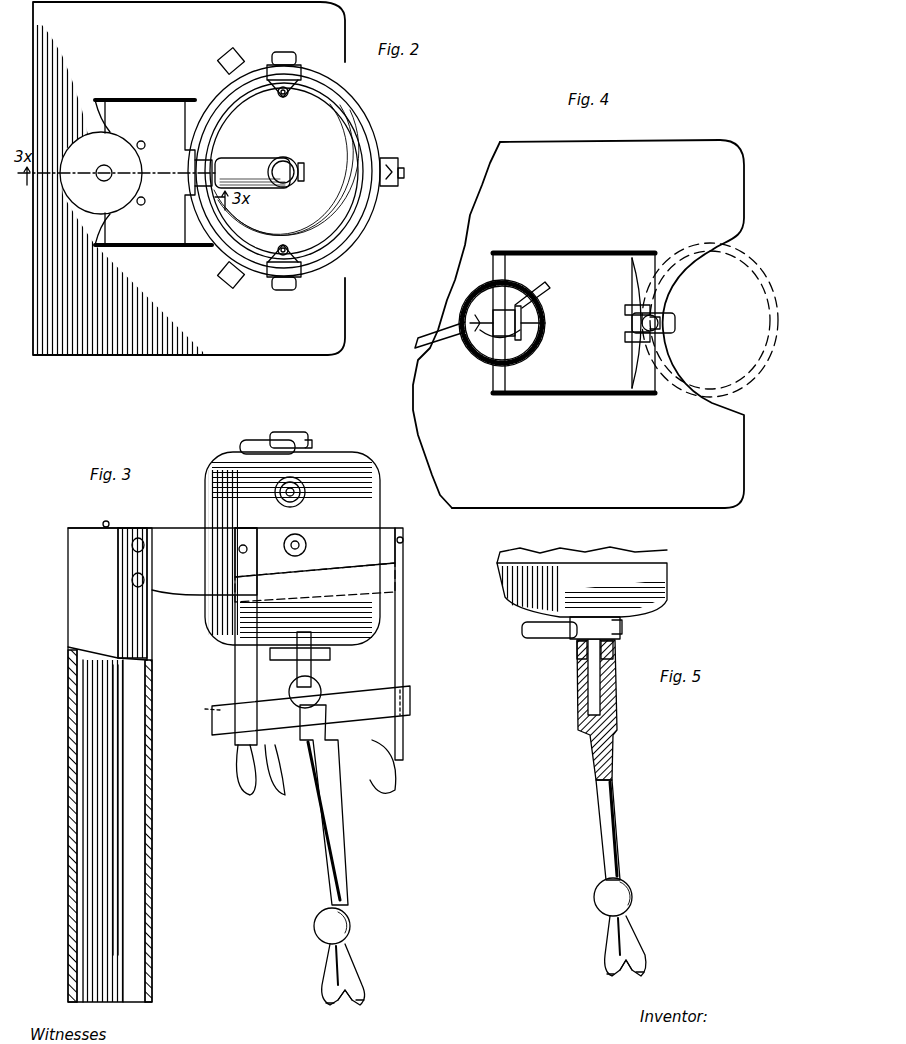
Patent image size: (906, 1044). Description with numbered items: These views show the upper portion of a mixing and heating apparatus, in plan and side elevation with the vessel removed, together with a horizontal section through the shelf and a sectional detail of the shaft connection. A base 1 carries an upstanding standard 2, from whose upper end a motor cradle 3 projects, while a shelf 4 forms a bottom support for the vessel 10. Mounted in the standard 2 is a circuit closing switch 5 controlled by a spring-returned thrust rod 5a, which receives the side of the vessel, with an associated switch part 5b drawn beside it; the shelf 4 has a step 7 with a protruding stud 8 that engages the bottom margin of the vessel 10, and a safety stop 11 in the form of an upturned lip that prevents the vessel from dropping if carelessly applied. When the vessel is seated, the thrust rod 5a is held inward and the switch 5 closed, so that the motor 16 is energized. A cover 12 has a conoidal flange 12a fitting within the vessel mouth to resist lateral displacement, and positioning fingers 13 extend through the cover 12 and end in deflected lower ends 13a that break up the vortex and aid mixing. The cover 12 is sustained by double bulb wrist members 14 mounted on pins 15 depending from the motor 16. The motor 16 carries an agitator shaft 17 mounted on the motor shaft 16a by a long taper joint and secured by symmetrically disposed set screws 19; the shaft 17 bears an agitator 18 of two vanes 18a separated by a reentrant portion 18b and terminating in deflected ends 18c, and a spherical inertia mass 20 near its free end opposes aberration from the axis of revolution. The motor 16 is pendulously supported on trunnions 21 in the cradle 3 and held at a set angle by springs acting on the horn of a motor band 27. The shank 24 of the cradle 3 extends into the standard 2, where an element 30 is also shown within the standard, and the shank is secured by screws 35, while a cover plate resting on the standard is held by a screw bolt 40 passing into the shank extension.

In FIG. 2, the base 1 is at (189, 178).
In FIG. 2, the standard 2 is at (115, 150).
In FIG. 4, the standard 2 is at (480, 293).
In FIG. 3, the standard 2 is at (152, 895).
In FIG. 2, the motor cradle 3 is at (372, 123).
In FIG. 3, the motor cradle 3 is at (362, 540).
In FIG. 2, the shelf 4 is at (162, 220).
In FIG. 4, the shelf 4 is at (574, 323).
In FIG. 4, the circuit closing switch 5 is at (508, 308).
In FIG. 4, the thrust rod 5a is at (628, 335).
In FIG. 4, the switch arm 5b is at (541, 295).
In FIG. 4, the step 7 is at (675, 322).
In FIG. 4, the stud 8 is at (658, 318).
In FIG. 4, the vessel 10 is at (755, 280).
In FIG. 4, the safety stop 11 is at (676, 323).
In FIG. 3, the cover 12 is at (212, 728).
In FIG. 3, the conoidal flange 12a is at (410, 700).
In FIG. 2, the positioning fingers 13 is at (230, 58).
In FIG. 3, the positioning fingers 13 is at (240, 680).
In FIG. 3, the deflected lower ends 13a is at (245, 780).
In FIG. 3, the double bulb wrist members 14 is at (320, 688).
In FIG. 3, the pins 15 is at (304, 630).
In FIG. 2, the motor 16 is at (259, 156).
In FIG. 3, the motor 16 is at (362, 475).
In FIG. 5, the motor 16 is at (652, 572).
In FIG. 5, the motor shaft 16a is at (595, 695).
In FIG. 3, the agitator shaft 17 is at (345, 870).
In FIG. 5, the agitator shaft 17 is at (620, 818).
In FIG. 3, the agitator 18 is at (350, 960).
In FIG. 5, the agitator 18 is at (630, 932).
In FIG. 3, the vanes 18a is at (322, 975).
In FIG. 5, the vanes 18a is at (605, 952).
In FIG. 3, the reentrant portion 18b is at (345, 1005).
In FIG. 5, the reentrant portion 18b is at (626, 975).
In FIG. 3, the deflected ends 18c is at (364, 996).
In FIG. 5, the deflected ends 18c is at (645, 972).
In FIG. 5, the set screws 19 is at (578, 652).
In FIG. 3, the inertia mass 20 is at (350, 915).
In FIG. 5, the inertia mass 20 is at (630, 885).
In FIG. 2, the trunnions 21 is at (292, 58).
In FIG. 3, the trunnions 21 is at (298, 543).
In FIG. 3, the shank 24 is at (160, 560).
In FIG. 2, the motor band 27 is at (368, 195).
In FIG. 3, the motor band 27 is at (375, 578).
In FIG. 5, the motor band 27 is at (668, 552).
In FIG. 3, the rod 30 is at (140, 842).
In FIG. 2, the screws 35 is at (145, 143).
In FIG. 3, the screws 35 is at (132, 570).
In FIG. 2, the screw bolt 40 is at (113, 160).
In FIG. 3, the screw bolt 40 is at (107, 513).